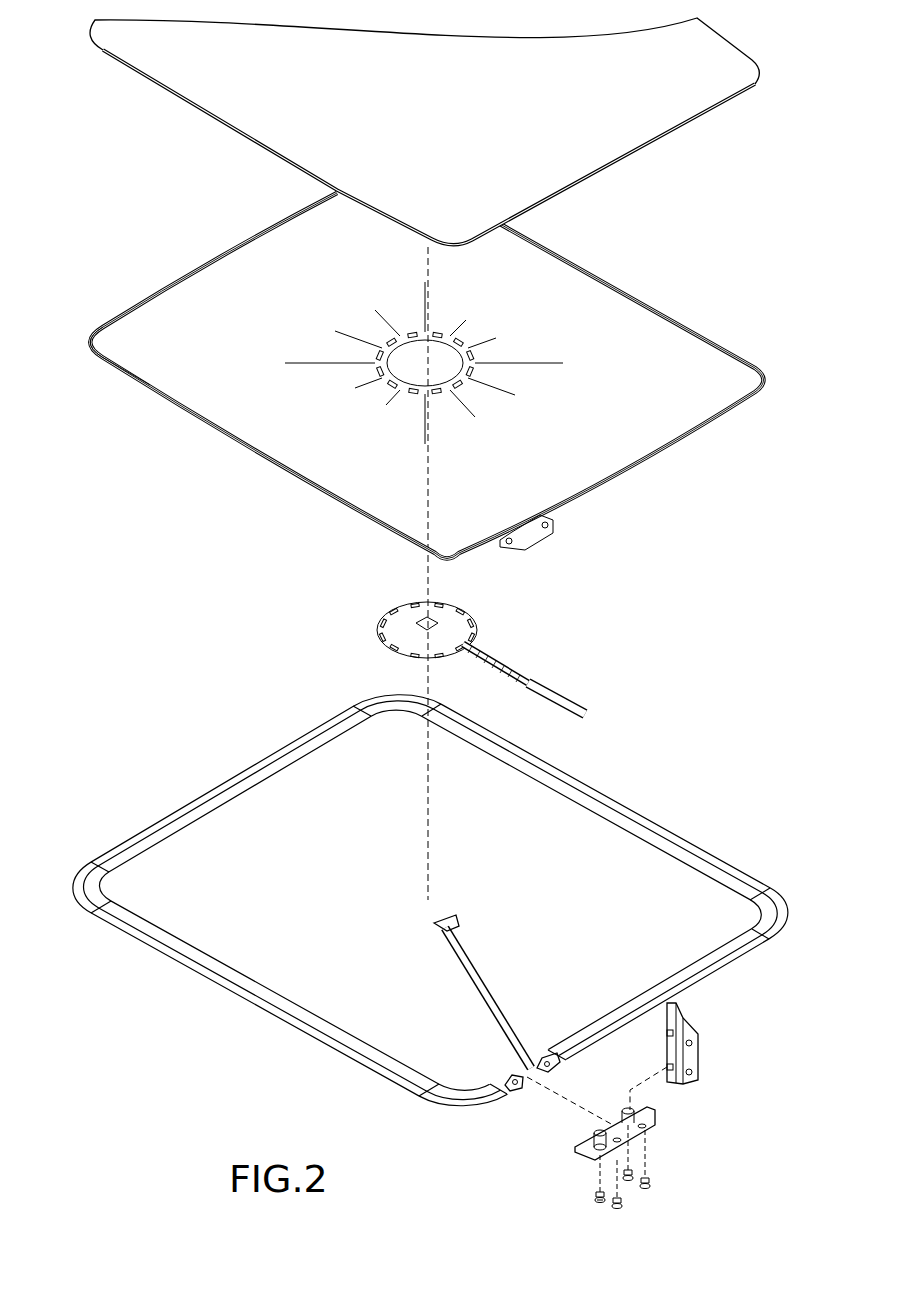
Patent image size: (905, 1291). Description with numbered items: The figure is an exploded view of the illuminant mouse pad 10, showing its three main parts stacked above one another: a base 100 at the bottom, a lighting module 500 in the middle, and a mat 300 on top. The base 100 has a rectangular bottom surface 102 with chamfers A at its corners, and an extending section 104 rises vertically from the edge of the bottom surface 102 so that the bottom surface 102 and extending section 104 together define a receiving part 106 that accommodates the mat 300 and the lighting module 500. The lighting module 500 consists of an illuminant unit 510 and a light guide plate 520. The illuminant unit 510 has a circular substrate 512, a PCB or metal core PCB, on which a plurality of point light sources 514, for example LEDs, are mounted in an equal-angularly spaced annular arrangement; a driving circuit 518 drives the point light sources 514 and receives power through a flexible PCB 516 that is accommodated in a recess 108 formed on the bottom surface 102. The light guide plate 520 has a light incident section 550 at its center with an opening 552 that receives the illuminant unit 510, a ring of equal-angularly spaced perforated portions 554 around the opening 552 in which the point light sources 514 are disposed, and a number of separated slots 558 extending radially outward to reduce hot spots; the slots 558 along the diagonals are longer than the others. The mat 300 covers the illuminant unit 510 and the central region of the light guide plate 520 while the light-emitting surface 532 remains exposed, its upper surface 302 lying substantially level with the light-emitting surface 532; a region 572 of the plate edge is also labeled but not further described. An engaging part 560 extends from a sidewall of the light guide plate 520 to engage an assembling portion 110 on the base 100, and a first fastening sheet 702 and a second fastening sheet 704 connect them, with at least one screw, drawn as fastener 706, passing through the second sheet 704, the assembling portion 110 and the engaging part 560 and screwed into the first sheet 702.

The illuminant mouse pad 10 is at (127, 162).
The base 100 is at (138, 826).
The bottom surface 102 is at (232, 930).
The extending section 104 is at (248, 992).
The receiving part 106 is at (614, 850).
The recess 108 is at (468, 1012).
The assembling portion 110 is at (522, 1090).
The mat 300 is at (442, 131).
The upper surface 302 is at (598, 150).
The lighting module 500 is at (233, 660).
The illuminant unit 510 is at (410, 632).
The substrate 512 is at (440, 615).
The point light sources 514 is at (462, 618).
The flexible PCB 516 is at (500, 668).
The driving circuit 518 is at (421, 617).
The light guide plate 520 is at (400, 376).
The light-emitting surface 532 is at (92, 335).
The light incident section 550 is at (178, 305).
The opening 552 is at (452, 352).
The perforated portions 554 is at (460, 383).
The slots 558 is at (535, 363).
The engaging part 560 is at (532, 540).
The panel edge 572 is at (127, 384).
The first fastening sheet 702 is at (697, 1060).
The second fastening sheet 704 is at (655, 1127).
The screws 706 is at (660, 1187).
The chamfers A is at (72, 903).